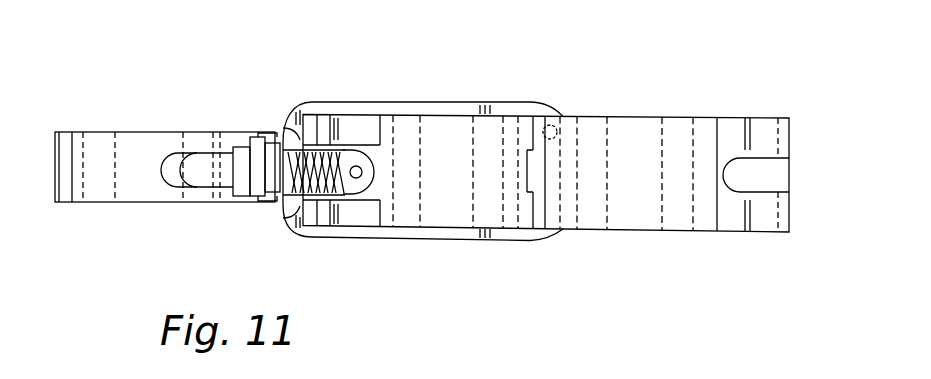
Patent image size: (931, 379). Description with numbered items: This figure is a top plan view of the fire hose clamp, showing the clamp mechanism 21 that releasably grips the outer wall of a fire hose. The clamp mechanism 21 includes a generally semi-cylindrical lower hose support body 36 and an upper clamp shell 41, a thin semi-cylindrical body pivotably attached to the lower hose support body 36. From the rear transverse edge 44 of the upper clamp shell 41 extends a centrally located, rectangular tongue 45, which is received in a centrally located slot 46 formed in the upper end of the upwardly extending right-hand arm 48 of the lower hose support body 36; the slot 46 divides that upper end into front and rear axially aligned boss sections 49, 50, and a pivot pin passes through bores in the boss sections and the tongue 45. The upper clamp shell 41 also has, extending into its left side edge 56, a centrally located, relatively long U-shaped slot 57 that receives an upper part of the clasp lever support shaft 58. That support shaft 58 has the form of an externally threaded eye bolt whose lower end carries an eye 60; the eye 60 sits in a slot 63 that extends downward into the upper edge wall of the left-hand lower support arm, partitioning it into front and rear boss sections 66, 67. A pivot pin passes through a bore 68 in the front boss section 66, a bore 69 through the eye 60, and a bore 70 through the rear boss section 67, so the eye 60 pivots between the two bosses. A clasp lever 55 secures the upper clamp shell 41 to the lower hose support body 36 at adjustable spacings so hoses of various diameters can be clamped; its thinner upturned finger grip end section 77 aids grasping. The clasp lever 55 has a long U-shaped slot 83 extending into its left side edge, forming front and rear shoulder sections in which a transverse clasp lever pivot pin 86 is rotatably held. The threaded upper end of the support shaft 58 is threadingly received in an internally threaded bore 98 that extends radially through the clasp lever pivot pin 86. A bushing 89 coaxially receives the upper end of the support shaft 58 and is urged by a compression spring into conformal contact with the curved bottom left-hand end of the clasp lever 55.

The clamp mechanism 21 is at (550, 166).
The lower hose support body 36 is at (440, 213).
The upper clamp shell 41 is at (643, 113).
The rear transverse edge 44 is at (531, 148).
The tongue 45 is at (536, 182).
The slot 46 is at (536, 166).
The right-hand arm 48 is at (515, 217).
The front boss section 49 is at (542, 212).
The rear boss section 50 is at (533, 150).
The clasp lever 55 is at (112, 128).
The left side edge 56 is at (790, 135).
The U-shaped slot 57 is at (530, 147).
The clasp lever support shaft 58 is at (297, 203).
The eye 60 is at (315, 218).
The slot 63 is at (304, 152).
The front boss section 66 is at (350, 198).
The rear boss section 67 is at (423, 153).
The bore 68 is at (365, 238).
The bore 69 is at (372, 172).
The bore 70 is at (362, 113).
The finger grip end section 77 is at (55, 167).
The U-shaped slot 83 is at (205, 171).
The clasp lever pivot pin 86 is at (230, 160).
The bushing 89 is at (264, 136).
The internally threaded bore 98 is at (246, 176).